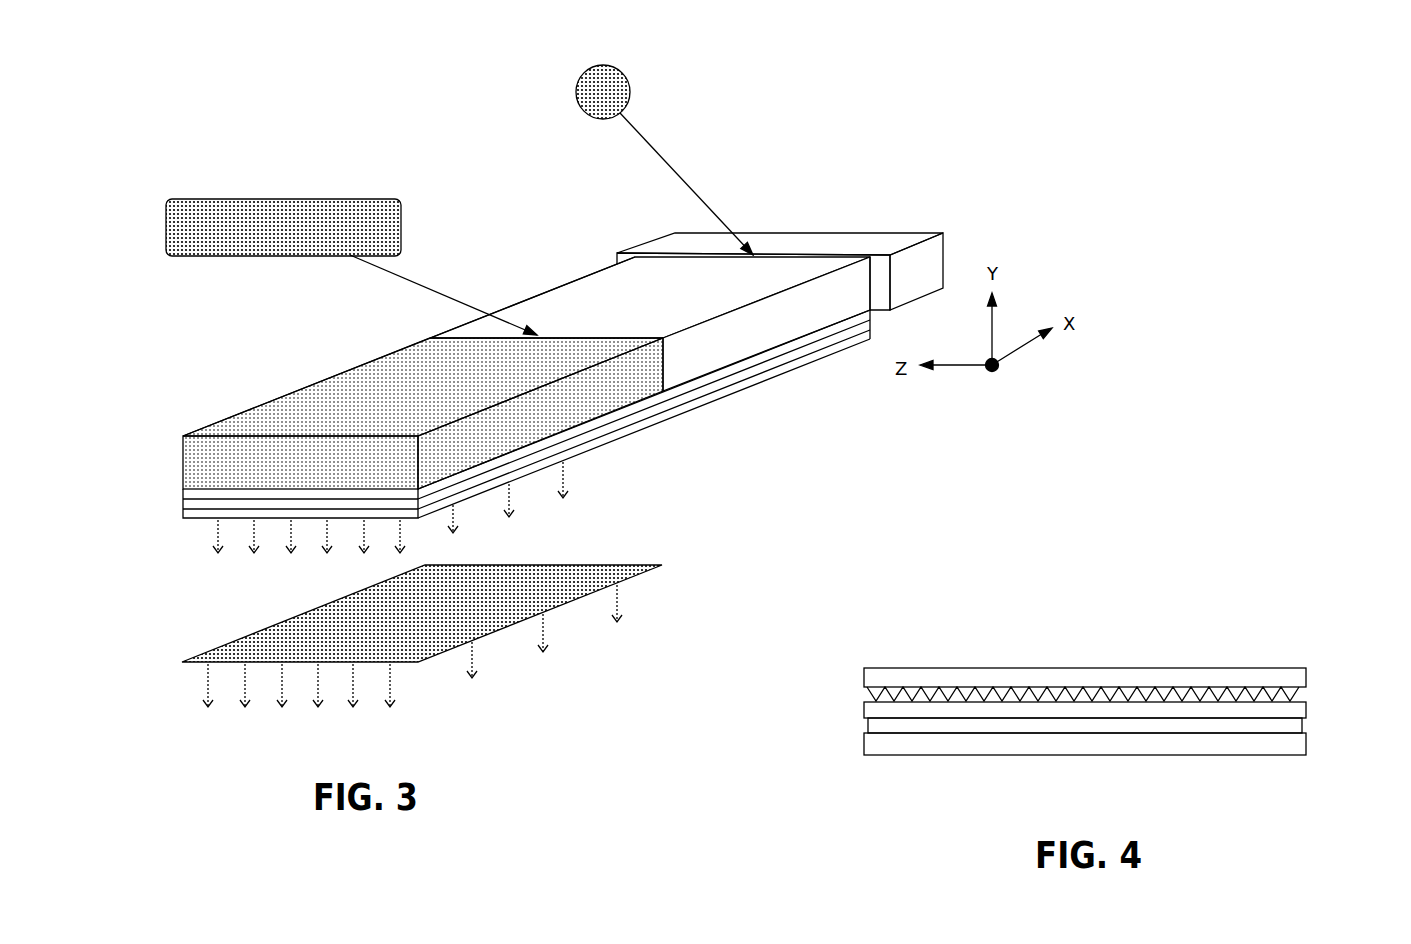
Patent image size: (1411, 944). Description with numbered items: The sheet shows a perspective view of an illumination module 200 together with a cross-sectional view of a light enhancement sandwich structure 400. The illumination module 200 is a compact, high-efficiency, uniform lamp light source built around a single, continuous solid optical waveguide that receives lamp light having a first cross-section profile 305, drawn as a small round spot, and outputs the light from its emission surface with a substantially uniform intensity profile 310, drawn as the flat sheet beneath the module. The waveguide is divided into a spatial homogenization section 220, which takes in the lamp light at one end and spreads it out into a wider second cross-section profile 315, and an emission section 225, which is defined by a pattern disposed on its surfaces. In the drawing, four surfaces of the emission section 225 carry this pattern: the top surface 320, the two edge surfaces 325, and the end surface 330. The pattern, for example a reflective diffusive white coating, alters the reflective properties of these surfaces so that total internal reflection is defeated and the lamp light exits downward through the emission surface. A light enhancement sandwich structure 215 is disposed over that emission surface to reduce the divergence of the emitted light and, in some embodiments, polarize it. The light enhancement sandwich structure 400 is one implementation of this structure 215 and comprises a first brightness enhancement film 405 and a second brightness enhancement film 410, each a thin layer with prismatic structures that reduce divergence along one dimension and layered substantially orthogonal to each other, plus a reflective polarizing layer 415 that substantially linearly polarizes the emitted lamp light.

In FIG. 3, the illumination module 200 is at (430, 157).
In FIG. 3, the light enhancement sandwich structure 215 is at (682, 415).
In FIG. 3, the spatial homogenization section 220 is at (668, 305).
In FIG. 3, the emission section 225 is at (390, 374).
In FIG. 3, the first cross-section profile 305 is at (632, 88).
In FIG. 3, the substantially uniform intensity profile 310 is at (434, 630).
In FIG. 3, the second cross-section profile 315 is at (282, 198).
In FIG. 3, the top surface 320 is at (337, 400).
In FIG. 3, the edge surfaces 325 is at (223, 400).
In FIG. 3, the end surface 330 is at (210, 473).
In FIG. 4, the light enhancement sandwich structure 400 is at (1088, 671).
In FIG. 4, the first brightness enhancement film 405 is at (851, 679).
In FIG. 4, the second brightness enhancement film 410 is at (1323, 720).
In FIG. 4, the reflective polarizing layer 415 is at (862, 743).